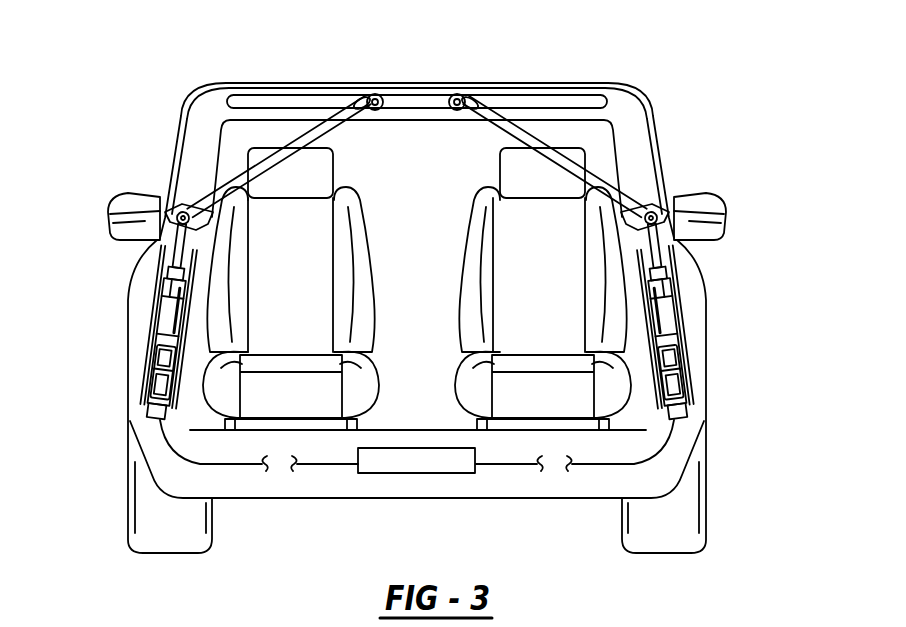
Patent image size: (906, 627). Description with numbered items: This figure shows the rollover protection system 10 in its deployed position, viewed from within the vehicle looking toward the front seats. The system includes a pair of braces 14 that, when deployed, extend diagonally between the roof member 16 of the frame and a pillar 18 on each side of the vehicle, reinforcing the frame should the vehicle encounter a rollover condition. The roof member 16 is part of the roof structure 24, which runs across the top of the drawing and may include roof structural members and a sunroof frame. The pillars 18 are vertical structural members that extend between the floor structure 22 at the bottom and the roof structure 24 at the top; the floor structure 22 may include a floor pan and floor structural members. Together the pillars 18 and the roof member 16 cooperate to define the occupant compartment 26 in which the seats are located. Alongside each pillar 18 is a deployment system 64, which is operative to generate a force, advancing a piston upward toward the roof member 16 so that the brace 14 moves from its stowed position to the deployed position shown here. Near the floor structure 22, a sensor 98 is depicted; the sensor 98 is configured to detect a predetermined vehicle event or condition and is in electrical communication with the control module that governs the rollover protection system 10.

The rollover protection system 10 is at (727, 262).
The brace 14 is at (235, 173).
The roof member 16 is at (512, 82).
The pillar 18 is at (147, 290).
The floor structure 22 is at (344, 472).
The roof structure 24 is at (411, 83).
The occupant compartment 26 is at (429, 186).
The deployment system 64 is at (690, 375).
The sensor 98 is at (430, 465).